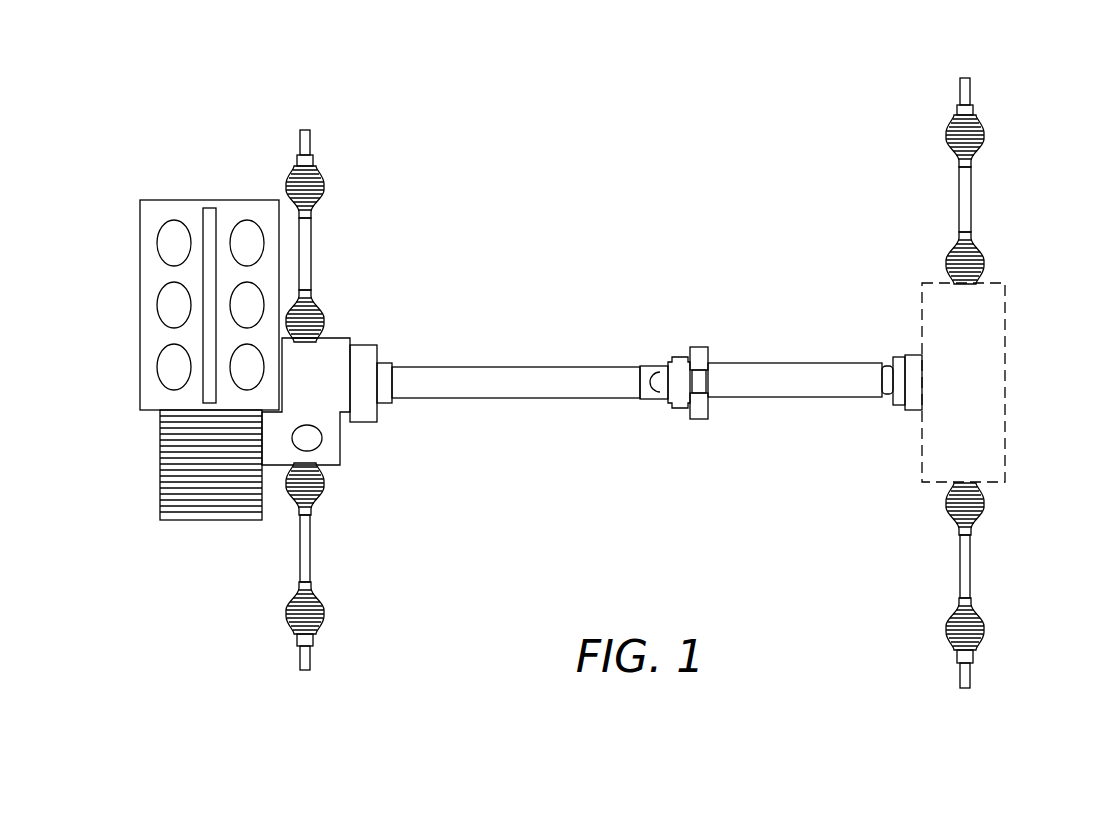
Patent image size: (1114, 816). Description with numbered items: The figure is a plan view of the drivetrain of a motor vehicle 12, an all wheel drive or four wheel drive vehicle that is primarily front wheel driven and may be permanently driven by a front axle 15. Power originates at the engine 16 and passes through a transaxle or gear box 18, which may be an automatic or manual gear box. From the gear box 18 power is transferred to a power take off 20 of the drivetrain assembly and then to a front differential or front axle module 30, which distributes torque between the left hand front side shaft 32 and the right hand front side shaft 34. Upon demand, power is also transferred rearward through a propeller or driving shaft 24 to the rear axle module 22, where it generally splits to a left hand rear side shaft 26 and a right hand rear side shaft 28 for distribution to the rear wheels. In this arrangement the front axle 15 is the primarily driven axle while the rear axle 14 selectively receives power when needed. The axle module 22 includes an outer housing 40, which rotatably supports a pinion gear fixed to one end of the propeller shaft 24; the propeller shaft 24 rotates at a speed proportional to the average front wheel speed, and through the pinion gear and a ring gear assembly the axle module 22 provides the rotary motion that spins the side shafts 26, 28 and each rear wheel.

The motor vehicle 12 is at (260, 142).
The rear axle 14 is at (1005, 383).
The front axle 15 is at (322, 294).
The engine 16 is at (172, 200).
The gear box 18 is at (212, 482).
The power take off 20 is at (336, 354).
The axle module 22 is at (980, 320).
The propeller shaft 24 is at (608, 370).
The left hand rear side shaft 26 is at (968, 188).
The right hand rear side shaft 28 is at (970, 572).
The front differential 30 is at (318, 437).
The left hand front side shaft 32 is at (337, 236).
The right hand front side shaft 34 is at (312, 548).
The outer housing 40 is at (1005, 375).